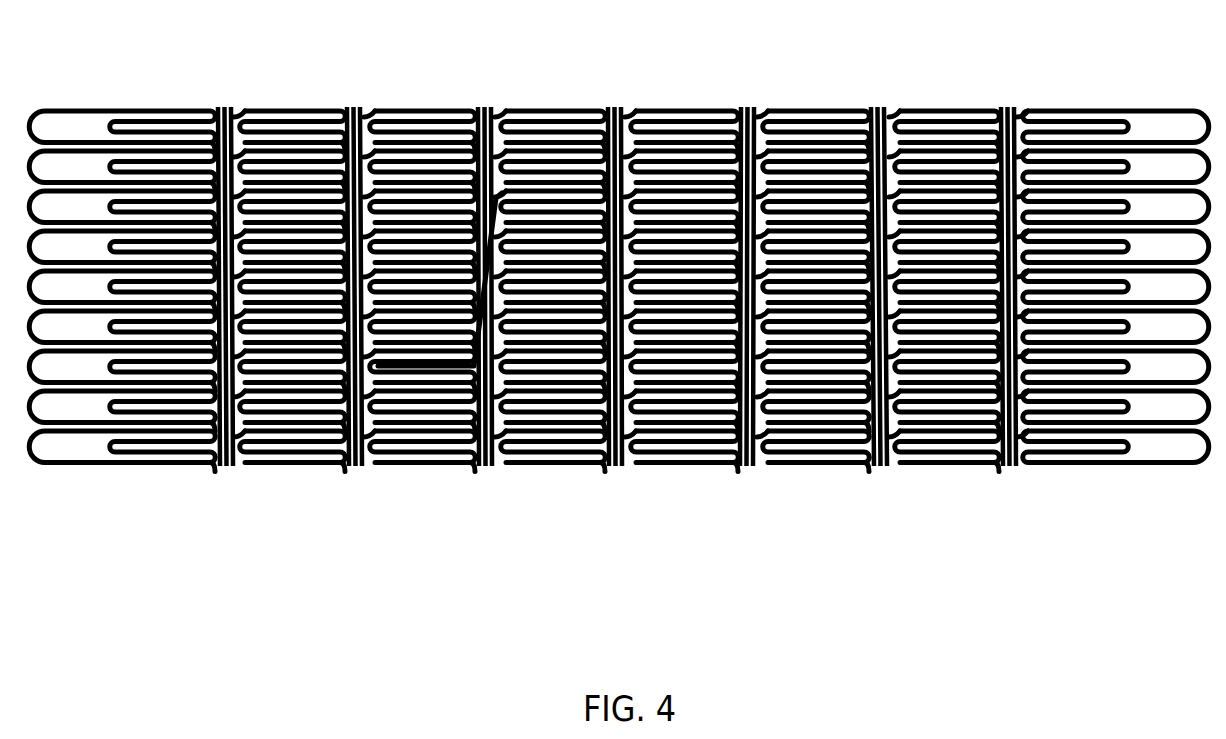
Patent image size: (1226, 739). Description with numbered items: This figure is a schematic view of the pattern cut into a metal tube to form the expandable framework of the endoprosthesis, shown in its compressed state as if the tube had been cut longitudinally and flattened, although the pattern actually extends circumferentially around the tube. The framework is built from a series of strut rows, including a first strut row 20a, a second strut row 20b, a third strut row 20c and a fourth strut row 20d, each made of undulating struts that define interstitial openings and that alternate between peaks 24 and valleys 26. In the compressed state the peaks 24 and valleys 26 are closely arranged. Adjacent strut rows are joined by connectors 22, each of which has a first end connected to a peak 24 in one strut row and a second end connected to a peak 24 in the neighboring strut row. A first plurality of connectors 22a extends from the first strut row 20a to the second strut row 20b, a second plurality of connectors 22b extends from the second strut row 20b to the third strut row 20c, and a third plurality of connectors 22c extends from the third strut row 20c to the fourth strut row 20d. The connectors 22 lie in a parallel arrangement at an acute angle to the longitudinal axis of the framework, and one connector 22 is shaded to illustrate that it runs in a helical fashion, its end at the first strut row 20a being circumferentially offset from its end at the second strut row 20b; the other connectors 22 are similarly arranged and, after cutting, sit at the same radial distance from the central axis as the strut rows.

The first strut row 20a is at (438, 107).
The second strut row 20b is at (578, 110).
The third strut row 20c is at (712, 107).
The fourth strut row 20d is at (838, 107).
The connector 22 is at (493, 362).
The first plurality of connectors 22a is at (478, 455).
The second plurality of connectors 22b is at (613, 455).
The third plurality of connectors 22c is at (742, 455).
The peak 24 is at (510, 292).
The valley 26 is at (678, 292).